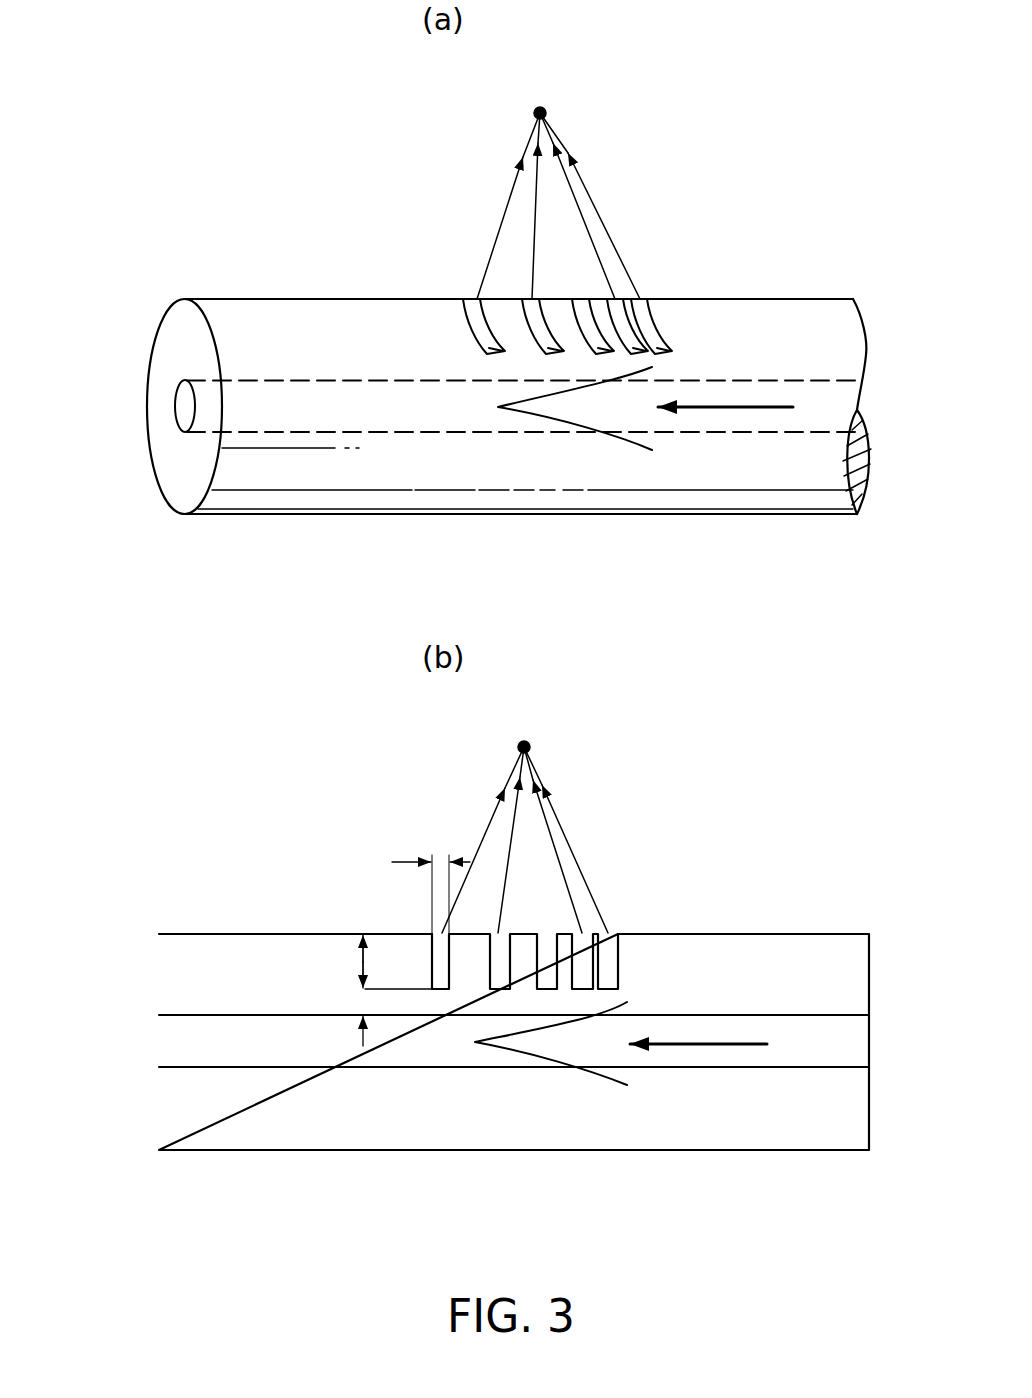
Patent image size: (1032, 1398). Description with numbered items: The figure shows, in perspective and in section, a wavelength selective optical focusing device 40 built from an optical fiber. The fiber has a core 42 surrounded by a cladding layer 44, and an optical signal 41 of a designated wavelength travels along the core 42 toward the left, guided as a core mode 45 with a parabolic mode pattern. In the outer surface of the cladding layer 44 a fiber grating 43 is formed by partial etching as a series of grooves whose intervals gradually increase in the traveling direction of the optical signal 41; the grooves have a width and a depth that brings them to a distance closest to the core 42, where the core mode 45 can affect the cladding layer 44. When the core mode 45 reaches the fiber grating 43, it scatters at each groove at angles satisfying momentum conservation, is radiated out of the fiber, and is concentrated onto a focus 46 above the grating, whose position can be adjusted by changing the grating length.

The wavelength selective optical focusing device 40 is at (760, 258).
The optical signal 41 is at (747, 409).
The core 42 is at (180, 412).
The fiber grating 43 is at (651, 315).
The cladding layer 44 is at (180, 315).
The core mode 45 is at (567, 420).
The focus 46 is at (534, 112).